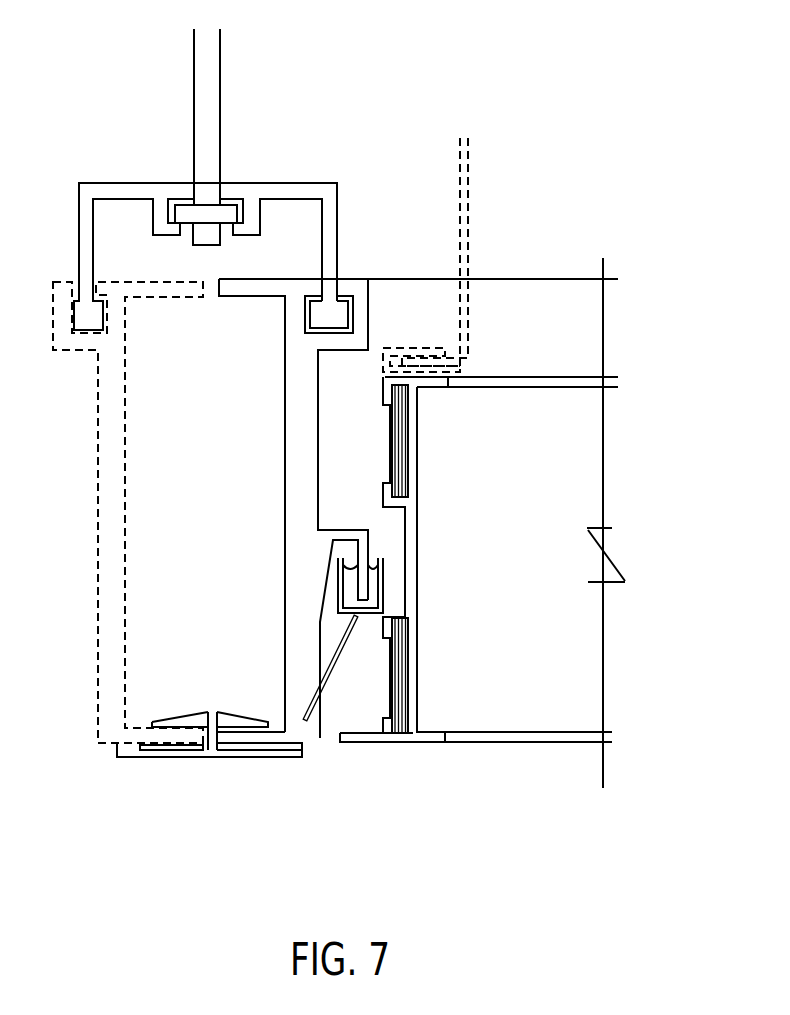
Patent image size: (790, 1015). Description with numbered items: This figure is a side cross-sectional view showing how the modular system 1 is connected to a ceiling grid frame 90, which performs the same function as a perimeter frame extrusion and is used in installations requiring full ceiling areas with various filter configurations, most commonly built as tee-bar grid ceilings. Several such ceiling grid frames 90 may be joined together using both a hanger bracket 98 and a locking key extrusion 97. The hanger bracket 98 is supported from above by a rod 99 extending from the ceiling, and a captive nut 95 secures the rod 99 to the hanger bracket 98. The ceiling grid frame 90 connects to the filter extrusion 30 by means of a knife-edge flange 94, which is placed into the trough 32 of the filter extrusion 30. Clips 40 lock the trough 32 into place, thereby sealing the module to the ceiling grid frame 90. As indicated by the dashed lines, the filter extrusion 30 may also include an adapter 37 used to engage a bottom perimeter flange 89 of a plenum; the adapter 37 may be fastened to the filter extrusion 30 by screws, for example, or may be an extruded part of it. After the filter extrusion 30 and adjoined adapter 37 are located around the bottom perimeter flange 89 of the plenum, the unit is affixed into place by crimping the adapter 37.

The modular system 1 is at (566, 177).
The filter extrusion 30 is at (428, 745).
The trough 32 is at (372, 615).
The adapter 37 is at (410, 347).
The clip 40 is at (322, 695).
The bottom perimeter flange 89 is at (470, 358).
The ceiling grid frame 90 is at (358, 278).
The knife-edge flange 94 is at (352, 530).
The captive nut 95 is at (200, 215).
The locking key extrusion 97 is at (117, 755).
The hanger bracket 98 is at (305, 182).
The rod 99 is at (222, 85).